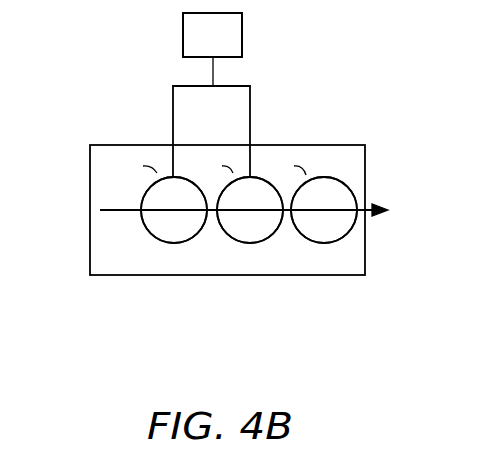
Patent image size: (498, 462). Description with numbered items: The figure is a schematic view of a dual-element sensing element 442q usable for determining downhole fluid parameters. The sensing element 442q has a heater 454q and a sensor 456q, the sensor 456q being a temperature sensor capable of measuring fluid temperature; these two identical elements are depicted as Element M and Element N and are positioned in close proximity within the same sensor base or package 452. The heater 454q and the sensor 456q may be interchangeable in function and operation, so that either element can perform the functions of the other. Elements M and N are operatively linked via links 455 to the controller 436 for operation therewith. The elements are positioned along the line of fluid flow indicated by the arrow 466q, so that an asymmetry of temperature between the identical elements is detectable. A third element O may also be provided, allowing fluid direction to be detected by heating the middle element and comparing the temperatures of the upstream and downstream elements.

The sensing element 442q is at (108, 56).
The controller 436 is at (230, 48).
The sensor base 452 is at (188, 159).
The links 455 is at (172, 128).
The flow path 466q is at (371, 205).
The heater 454q is at (318, 242).
The sensor 456q is at (249, 258).